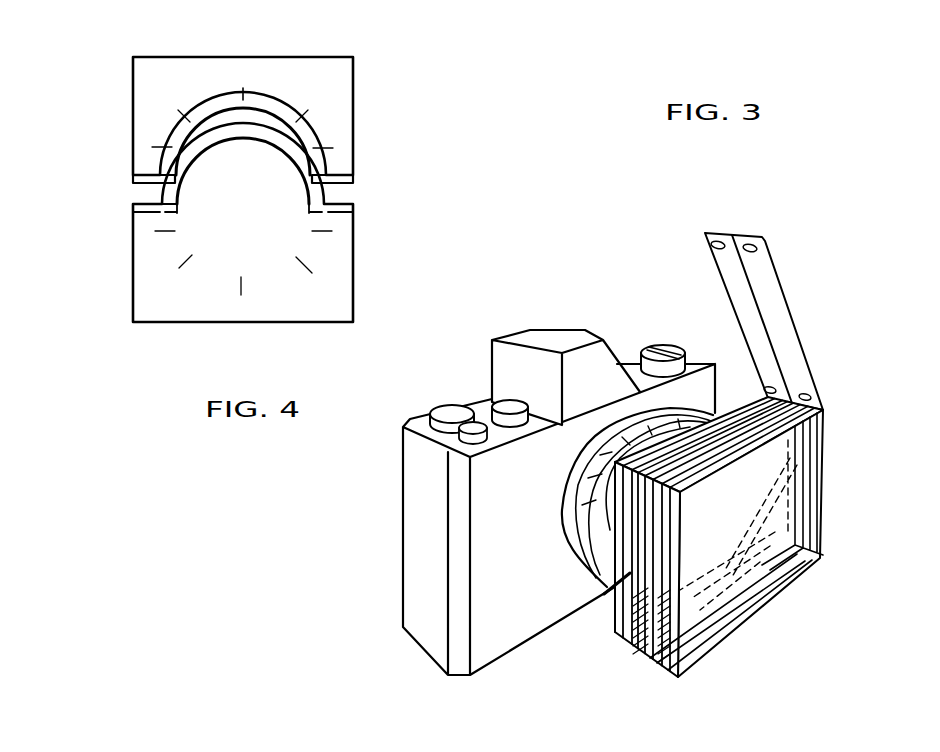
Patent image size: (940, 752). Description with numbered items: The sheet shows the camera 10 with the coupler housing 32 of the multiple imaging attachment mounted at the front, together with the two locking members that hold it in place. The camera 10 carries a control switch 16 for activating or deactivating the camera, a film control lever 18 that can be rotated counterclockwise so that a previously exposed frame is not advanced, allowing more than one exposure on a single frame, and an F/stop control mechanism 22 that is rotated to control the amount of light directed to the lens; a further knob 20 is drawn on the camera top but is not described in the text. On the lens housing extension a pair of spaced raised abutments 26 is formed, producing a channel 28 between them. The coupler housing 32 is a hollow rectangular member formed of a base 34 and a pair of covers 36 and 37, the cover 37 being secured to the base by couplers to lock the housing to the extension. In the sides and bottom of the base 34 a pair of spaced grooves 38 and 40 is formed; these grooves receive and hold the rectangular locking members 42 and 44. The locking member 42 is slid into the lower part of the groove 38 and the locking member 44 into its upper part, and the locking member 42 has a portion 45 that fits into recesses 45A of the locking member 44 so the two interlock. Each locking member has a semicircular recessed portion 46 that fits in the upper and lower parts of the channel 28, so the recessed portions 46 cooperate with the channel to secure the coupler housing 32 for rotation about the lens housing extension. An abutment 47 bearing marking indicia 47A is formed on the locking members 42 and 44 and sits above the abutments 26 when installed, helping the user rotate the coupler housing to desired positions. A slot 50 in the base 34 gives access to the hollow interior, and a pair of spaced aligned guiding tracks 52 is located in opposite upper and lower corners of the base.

In FIG. 3, the camera 10 is at (402, 583).
In FIG. 3, the control switch 16 is at (440, 448).
In FIG. 3, the film control lever 18 is at (455, 410).
In FIG. 3, the shutter speed knob 20 is at (510, 412).
In FIG. 3, the F/stop control mechanism 22 is at (605, 472).
In FIG. 3, the raised abutments 26 is at (643, 538).
In FIG. 3, the channel 28 is at (627, 550).
In FIG. 3, the coupler housing 32 is at (828, 433).
In FIG. 3, the base 34 is at (827, 495).
In FIG. 3, the cover 36 is at (738, 233).
In FIG. 3, the cover 37 is at (720, 233).
In FIG. 3, the groove 38 is at (623, 633).
In FIG. 3, the groove 40 is at (658, 667).
In FIG. 4, the locking member 42 is at (133, 89).
In FIG. 4, the locking member 44 is at (133, 261).
In FIG. 3, the locking member 44 is at (604, 594).
In FIG. 4, the portion 45 is at (133, 179).
In FIG. 4, the recesses 45A is at (157, 211).
In FIG. 4, the semicircular recessed portions 46 is at (260, 112).
In FIG. 4, the abutment 47 is at (303, 111).
In FIG. 4, the marking indicia 47A is at (243, 90).
In FIG. 3, the slot 50 is at (645, 650).
In FIG. 3, the guiding tracks 52 is at (823, 560).